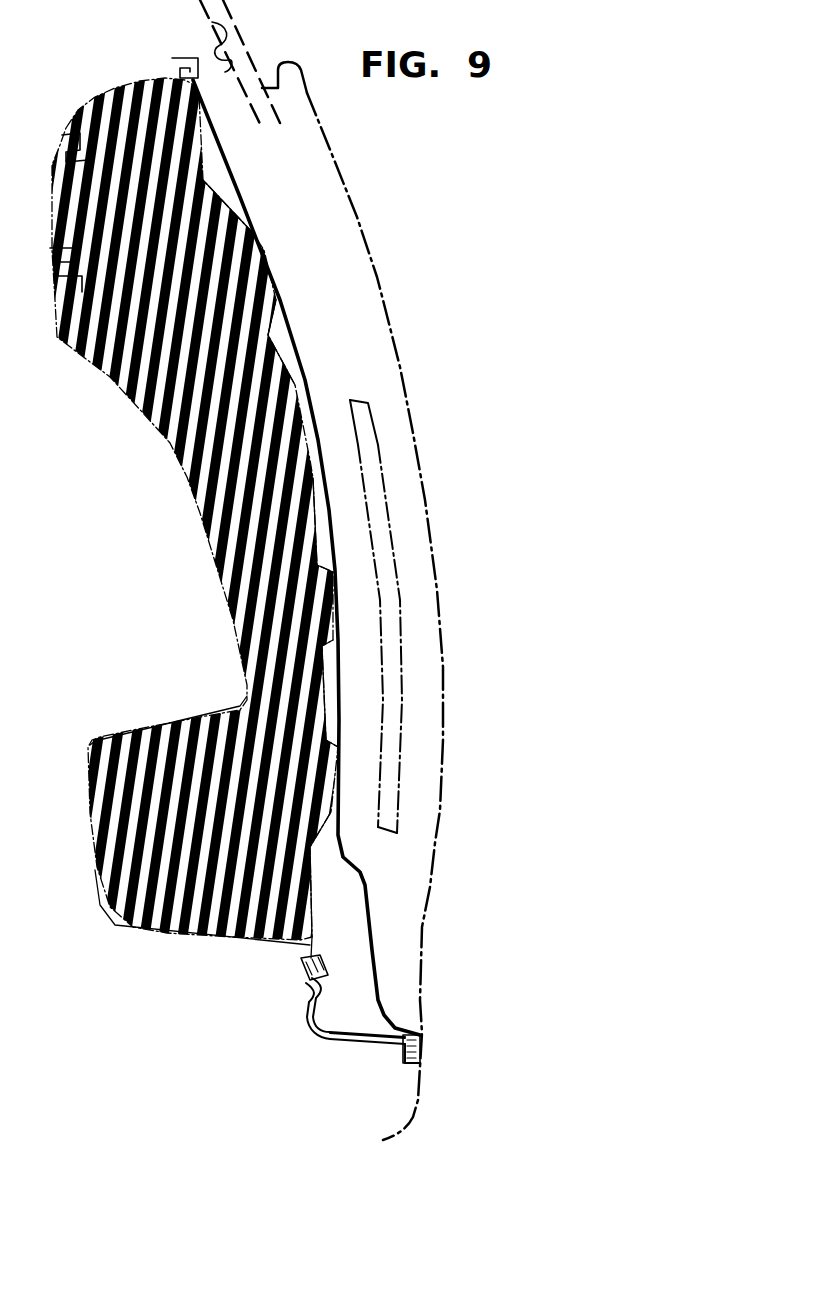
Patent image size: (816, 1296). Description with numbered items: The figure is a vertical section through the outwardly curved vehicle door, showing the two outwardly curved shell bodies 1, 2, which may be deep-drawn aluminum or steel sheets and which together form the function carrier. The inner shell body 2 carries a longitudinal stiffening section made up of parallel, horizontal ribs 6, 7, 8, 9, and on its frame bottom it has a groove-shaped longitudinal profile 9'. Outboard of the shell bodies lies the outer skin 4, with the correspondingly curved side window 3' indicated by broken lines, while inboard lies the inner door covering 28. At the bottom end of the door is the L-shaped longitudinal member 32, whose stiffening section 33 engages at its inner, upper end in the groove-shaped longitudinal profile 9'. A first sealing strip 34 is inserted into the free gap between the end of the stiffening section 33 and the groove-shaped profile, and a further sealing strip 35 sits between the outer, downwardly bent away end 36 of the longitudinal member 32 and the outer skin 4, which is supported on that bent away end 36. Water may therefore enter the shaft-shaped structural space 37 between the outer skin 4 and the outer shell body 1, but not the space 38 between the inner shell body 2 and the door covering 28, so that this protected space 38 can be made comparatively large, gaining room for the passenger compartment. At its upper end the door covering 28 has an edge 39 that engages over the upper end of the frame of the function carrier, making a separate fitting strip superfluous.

The outer shell body 1 is at (292, 374).
The inner shell body 2 is at (242, 510).
The side window 3' is at (418, 616).
The outer skin 4 is at (437, 842).
The rib 6 is at (323, 683).
The rib 7 is at (313, 503).
The rib 8 is at (280, 344).
The rib 9 is at (381, 533).
The groove-shaped longitudinal profile 9' is at (386, 948).
The inner door covering 28 is at (185, 483).
The longitudinal member 32 is at (330, 1037).
The stiffening section 33 is at (312, 992).
The first sealing strip 34 is at (303, 960).
The further sealing strip 35 is at (423, 1053).
The bent away end 36 is at (410, 1060).
The structural space 37 is at (356, 296).
The space 38 is at (100, 362).
The edge 39 is at (181, 52).